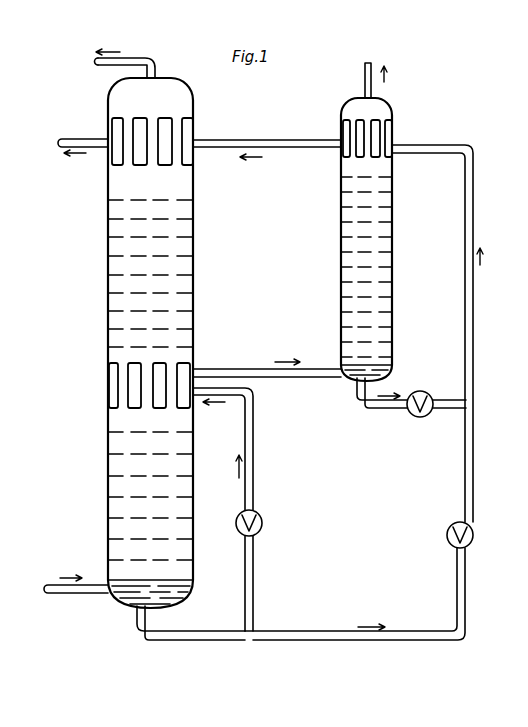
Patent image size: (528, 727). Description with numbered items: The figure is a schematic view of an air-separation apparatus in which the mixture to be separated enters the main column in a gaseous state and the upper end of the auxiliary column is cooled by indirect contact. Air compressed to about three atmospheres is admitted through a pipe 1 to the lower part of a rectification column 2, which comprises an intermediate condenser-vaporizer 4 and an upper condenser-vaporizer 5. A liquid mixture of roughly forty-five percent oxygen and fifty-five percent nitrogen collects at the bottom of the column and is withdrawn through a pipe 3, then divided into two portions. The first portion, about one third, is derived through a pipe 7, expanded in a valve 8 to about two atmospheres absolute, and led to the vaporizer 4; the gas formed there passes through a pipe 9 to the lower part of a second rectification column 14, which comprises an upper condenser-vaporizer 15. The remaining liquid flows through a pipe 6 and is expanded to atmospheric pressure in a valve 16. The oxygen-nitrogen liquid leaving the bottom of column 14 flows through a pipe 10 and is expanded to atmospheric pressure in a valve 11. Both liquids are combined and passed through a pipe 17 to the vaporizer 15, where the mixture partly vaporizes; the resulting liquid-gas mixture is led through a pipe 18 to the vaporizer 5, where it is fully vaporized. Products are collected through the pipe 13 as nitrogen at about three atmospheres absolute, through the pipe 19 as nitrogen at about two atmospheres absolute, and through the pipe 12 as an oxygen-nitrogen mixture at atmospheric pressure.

The pipe 1 is at (76, 594).
The rectification column 2 is at (108, 487).
The pipe 3 is at (196, 641).
The intermediate condenser-vaporizer 4 is at (110, 384).
The upper condenser-vaporizer 5 is at (118, 150).
The pipe 6 is at (300, 632).
The pipe 7 is at (256, 584).
The valve 8 is at (263, 523).
The pipe 9 is at (234, 369).
The pipe 10 is at (373, 412).
The valve 11 is at (418, 418).
The pipe 12 is at (83, 139).
The pipe 13 is at (115, 63).
The rectification column 14 is at (339, 252).
The upper condenser-vaporizer 15 is at (396, 134).
The valve 16 is at (473, 531).
The pipe 17 is at (473, 342).
The pipe 18 is at (260, 140).
The pipe 19 is at (365, 80).